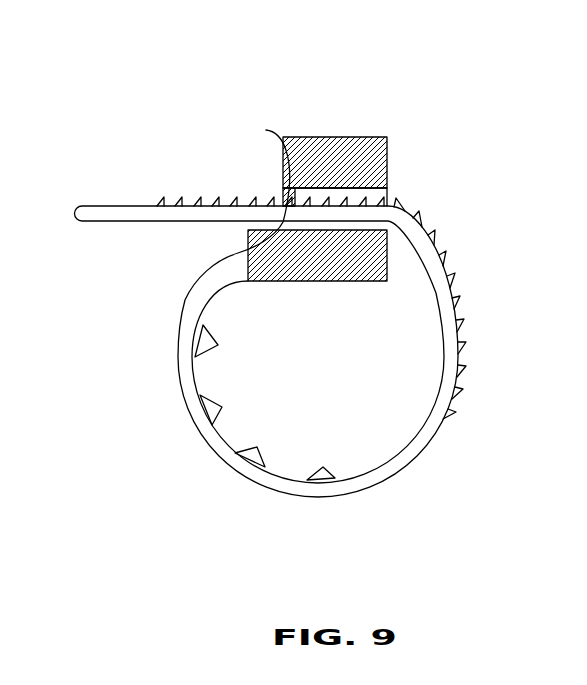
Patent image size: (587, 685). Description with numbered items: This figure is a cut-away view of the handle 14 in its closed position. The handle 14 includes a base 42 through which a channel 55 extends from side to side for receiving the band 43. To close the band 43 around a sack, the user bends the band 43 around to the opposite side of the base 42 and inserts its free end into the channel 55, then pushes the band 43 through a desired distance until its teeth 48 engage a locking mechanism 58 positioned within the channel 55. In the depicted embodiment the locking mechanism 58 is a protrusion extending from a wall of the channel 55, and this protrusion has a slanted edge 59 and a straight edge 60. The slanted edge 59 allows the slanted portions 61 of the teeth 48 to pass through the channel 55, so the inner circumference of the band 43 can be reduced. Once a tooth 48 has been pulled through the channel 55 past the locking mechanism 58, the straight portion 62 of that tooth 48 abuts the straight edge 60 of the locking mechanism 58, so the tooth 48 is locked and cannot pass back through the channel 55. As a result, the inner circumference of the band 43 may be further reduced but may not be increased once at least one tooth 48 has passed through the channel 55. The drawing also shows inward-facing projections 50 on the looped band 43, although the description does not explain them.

The handle 14 is at (268, 72).
The base 42 is at (336, 152).
The band 43 is at (105, 215).
The teeth 48 is at (458, 414).
The inner teeth 50 is at (317, 473).
The channel 55 is at (380, 192).
The locking mechanism 58 is at (267, 160).
The slanted edge 59 is at (252, 247).
The straight edge 60 is at (288, 193).
The slanted portions 61 is at (163, 202).
The straight portion 62 is at (165, 199).